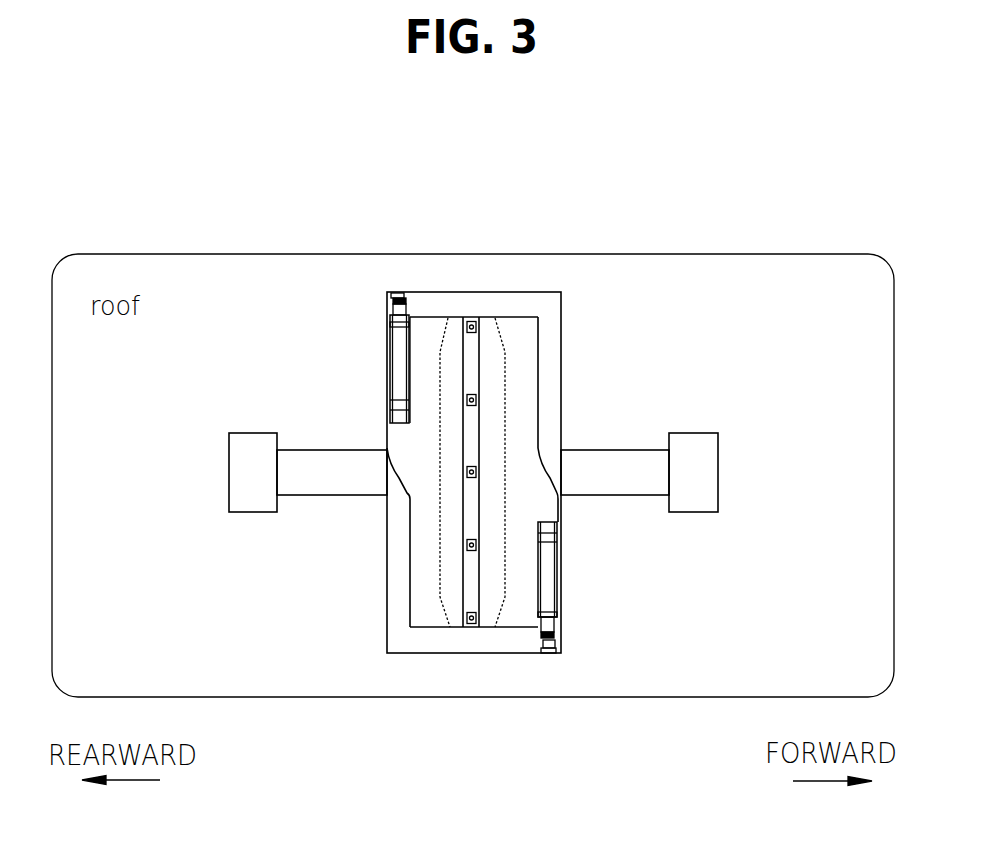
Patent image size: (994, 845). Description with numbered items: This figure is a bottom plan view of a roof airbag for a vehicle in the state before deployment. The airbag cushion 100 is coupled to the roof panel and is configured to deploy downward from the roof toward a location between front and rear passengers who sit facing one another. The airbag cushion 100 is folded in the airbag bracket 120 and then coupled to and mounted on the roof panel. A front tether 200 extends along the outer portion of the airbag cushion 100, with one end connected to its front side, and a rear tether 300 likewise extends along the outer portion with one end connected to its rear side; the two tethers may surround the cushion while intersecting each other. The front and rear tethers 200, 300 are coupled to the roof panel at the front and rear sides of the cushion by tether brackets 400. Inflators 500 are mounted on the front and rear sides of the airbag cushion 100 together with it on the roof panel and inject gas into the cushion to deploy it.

The airbag cushion 100 is at (526, 337).
The airbag bracket 120 is at (467, 303).
The front tether 200 is at (620, 475).
The rear tether 300 is at (327, 473).
The tether bracket 400 is at (253, 440).
The inflator 500 is at (397, 342).